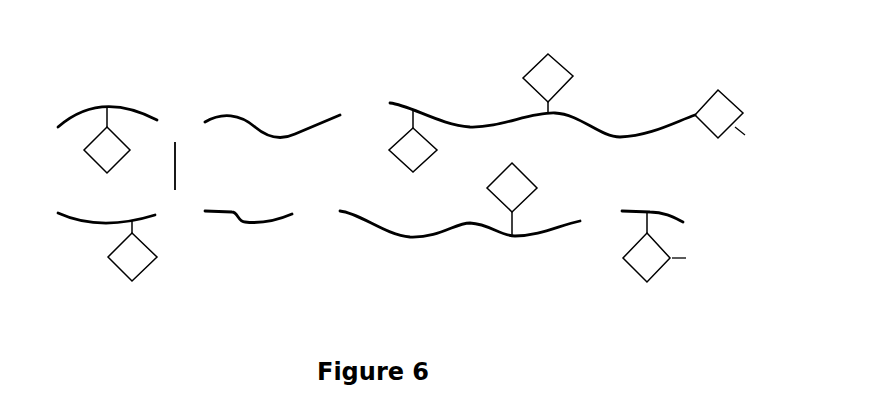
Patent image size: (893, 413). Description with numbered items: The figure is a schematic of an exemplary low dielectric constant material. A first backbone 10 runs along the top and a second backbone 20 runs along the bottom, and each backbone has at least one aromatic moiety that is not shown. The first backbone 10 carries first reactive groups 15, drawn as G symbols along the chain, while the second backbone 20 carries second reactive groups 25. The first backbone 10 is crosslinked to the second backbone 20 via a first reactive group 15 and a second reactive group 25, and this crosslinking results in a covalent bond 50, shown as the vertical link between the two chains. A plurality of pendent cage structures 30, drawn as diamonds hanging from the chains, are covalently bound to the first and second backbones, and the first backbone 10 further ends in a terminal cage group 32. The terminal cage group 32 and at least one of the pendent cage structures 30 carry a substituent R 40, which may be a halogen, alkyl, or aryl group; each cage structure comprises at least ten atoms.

The first backbone 10 is at (82, 108).
The second backbone 20 is at (80, 222).
The first reactive group 15 is at (172, 104).
The second reactive group 25 is at (180, 222).
The pendent cage structures 30 is at (112, 134).
The terminal cage group 32 is at (733, 100).
The substituent R 40 is at (710, 257).
The covalent bond 50 is at (180, 160).